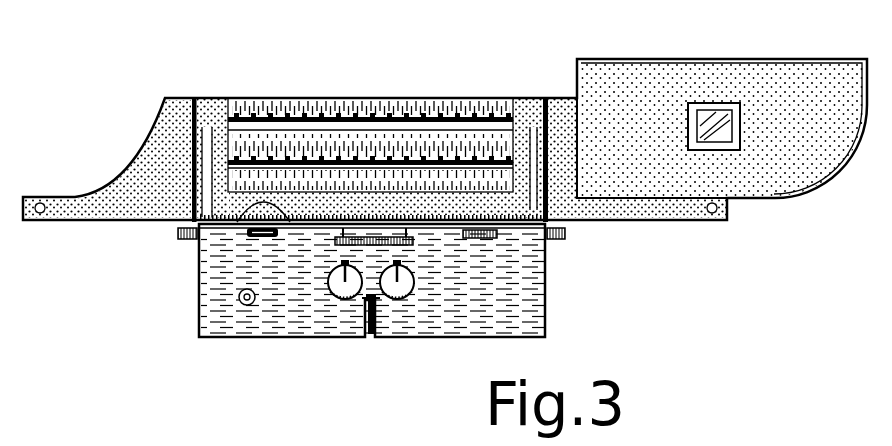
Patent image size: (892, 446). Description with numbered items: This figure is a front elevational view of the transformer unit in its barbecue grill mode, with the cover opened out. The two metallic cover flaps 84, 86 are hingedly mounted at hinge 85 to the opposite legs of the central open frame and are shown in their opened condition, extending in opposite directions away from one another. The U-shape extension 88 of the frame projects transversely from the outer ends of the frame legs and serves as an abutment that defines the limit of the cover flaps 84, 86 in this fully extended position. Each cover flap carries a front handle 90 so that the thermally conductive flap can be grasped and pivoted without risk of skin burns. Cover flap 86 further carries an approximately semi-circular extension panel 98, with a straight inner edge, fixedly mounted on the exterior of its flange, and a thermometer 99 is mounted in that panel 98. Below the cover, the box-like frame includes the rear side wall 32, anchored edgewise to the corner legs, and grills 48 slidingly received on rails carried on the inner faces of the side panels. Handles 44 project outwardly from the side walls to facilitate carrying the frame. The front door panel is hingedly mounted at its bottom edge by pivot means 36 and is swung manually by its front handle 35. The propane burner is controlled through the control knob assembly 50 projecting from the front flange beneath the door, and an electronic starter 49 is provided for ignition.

The cover flap 84 is at (112, 144).
The hinge 85 is at (193, 97).
The cover flap 86 is at (538, 100).
The rear side wall 32 is at (273, 112).
The grills 48 is at (360, 160).
The extension panel 98 is at (620, 82).
The thermometer 99 is at (722, 108).
The front handle 90 is at (55, 217).
The U-shape extension 88 is at (262, 203).
The handles 44 is at (178, 238).
The electronic starter 49 is at (239, 299).
The control knob assembly 50 is at (338, 308).
The front handle 35 is at (413, 247).
The pivot means 36 is at (485, 242).